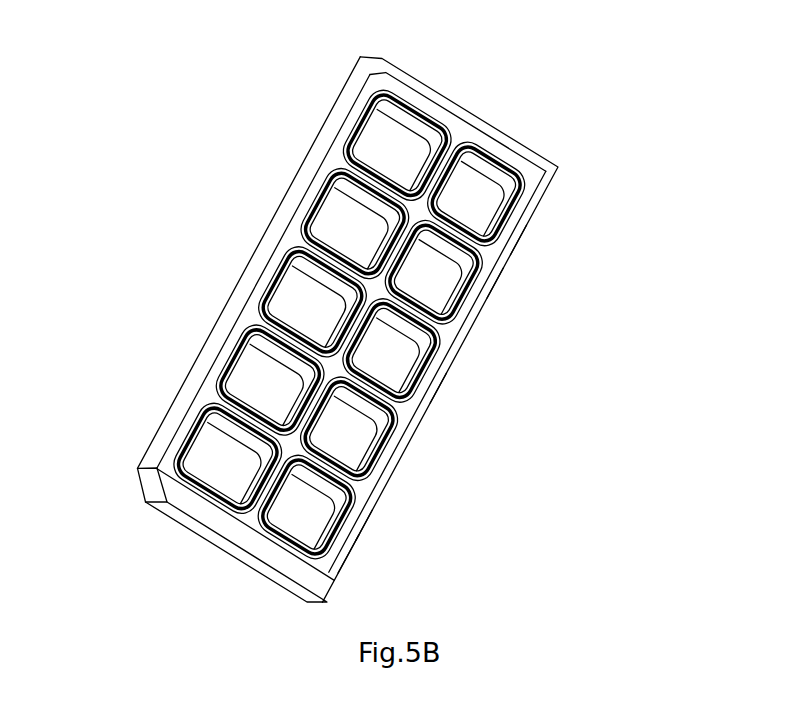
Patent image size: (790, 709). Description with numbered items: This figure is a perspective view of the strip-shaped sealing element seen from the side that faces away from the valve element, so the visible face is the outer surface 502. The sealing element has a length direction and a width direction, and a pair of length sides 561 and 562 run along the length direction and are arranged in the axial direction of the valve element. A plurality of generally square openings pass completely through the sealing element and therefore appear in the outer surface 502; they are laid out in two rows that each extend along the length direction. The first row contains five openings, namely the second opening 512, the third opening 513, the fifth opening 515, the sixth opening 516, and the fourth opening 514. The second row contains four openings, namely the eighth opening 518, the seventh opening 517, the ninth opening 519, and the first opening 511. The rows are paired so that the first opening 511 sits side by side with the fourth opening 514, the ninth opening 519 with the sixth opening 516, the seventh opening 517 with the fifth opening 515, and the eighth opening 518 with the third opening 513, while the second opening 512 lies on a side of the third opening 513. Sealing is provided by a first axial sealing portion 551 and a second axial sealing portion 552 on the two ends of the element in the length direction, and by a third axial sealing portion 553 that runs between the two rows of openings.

The outer surface 502 is at (360, 312).
The first opening 511 is at (217, 453).
The second opening 512 is at (487, 203).
The third opening 513 is at (493, 283).
The fourth opening 514 is at (362, 525).
The fifth opening 515 is at (437, 388).
The sixth opening 516 is at (367, 448).
The seventh opening 517 is at (305, 303).
The eighth opening 518 is at (353, 228).
The ninth opening 519 is at (258, 375).
The first axial sealing portion 551 is at (180, 462).
The second axial sealing portion 552 is at (350, 548).
The third axial sealing portion 553 is at (237, 522).
The length side 561 is at (357, 120).
The length side 562 is at (518, 240).